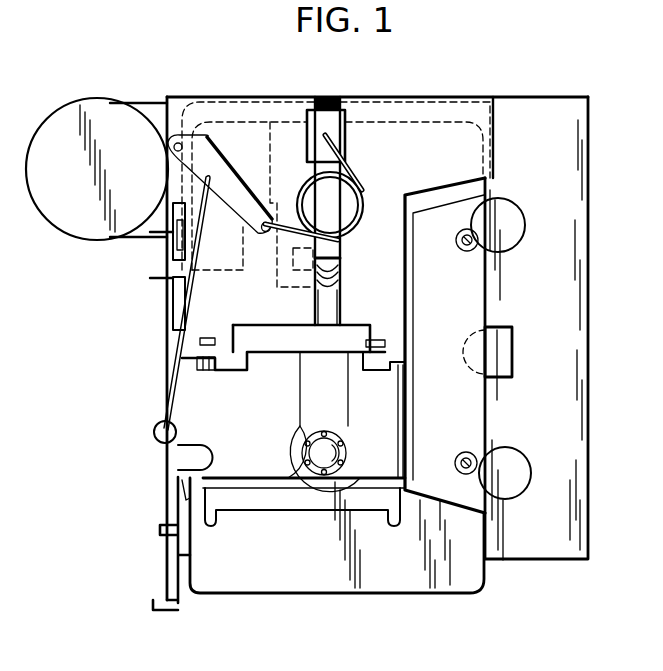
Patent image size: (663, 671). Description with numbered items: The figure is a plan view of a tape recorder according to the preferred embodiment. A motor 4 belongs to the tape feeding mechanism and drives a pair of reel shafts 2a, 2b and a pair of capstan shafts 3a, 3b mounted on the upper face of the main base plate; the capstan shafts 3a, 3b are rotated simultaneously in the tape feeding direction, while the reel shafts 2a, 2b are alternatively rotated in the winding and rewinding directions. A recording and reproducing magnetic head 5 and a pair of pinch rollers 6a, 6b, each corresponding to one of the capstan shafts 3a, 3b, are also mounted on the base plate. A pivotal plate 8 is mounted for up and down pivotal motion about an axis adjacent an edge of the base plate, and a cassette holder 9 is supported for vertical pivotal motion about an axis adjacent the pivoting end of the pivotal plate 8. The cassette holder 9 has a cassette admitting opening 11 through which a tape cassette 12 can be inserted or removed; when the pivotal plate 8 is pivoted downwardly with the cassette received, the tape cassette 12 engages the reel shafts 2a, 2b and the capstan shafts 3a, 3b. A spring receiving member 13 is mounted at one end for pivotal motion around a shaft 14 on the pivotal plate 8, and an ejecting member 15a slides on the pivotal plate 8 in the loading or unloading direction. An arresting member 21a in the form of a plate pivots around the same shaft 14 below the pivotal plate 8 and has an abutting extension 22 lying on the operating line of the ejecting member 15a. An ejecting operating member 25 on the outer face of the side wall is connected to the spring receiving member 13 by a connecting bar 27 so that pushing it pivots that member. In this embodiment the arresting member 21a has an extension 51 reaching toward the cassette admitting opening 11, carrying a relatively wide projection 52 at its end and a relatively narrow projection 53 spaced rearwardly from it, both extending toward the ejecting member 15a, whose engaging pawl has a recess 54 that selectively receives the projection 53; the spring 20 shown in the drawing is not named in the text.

The reel shaft 2a is at (318, 455).
The reel shaft 2b is at (341, 273).
The capstan shaft 3a is at (462, 475).
The capstan shaft 3b is at (465, 251).
The motor 4 is at (75, 228).
The recording and reproducing magnetic head 5 is at (503, 360).
The pinch roller 6a is at (515, 490).
The pinch roller 6b is at (513, 218).
The pivotal plate 8 is at (403, 317).
The cassette holder 9 is at (404, 412).
The cassette admitting opening 11 is at (318, 503).
The tape cassette 12 is at (408, 582).
The spring receiving member 13 is at (240, 171).
The shaft 14 is at (174, 148).
The ejecting member 15a is at (340, 245).
The torsion spring 20 is at (365, 203).
The arresting member 21a is at (240, 108).
The abutting extension 22 is at (322, 115).
The ejecting operating member 25 is at (168, 573).
The connecting bar 27 is at (180, 267).
The extension 51 is at (262, 258).
The projection 52 is at (298, 268).
The projection 53 is at (280, 252).
The recess 54 is at (341, 263).